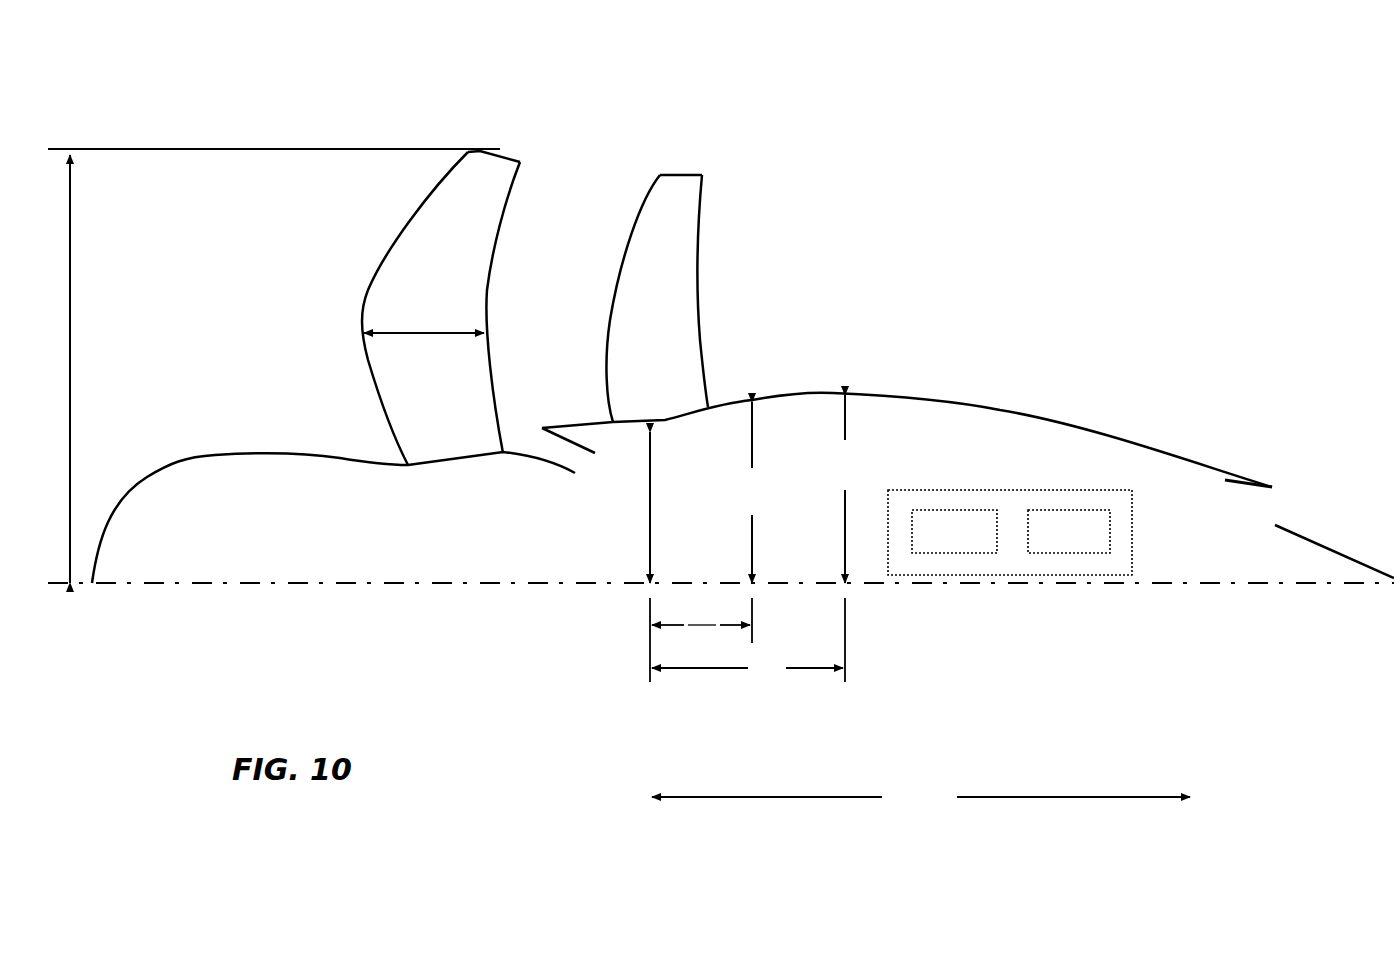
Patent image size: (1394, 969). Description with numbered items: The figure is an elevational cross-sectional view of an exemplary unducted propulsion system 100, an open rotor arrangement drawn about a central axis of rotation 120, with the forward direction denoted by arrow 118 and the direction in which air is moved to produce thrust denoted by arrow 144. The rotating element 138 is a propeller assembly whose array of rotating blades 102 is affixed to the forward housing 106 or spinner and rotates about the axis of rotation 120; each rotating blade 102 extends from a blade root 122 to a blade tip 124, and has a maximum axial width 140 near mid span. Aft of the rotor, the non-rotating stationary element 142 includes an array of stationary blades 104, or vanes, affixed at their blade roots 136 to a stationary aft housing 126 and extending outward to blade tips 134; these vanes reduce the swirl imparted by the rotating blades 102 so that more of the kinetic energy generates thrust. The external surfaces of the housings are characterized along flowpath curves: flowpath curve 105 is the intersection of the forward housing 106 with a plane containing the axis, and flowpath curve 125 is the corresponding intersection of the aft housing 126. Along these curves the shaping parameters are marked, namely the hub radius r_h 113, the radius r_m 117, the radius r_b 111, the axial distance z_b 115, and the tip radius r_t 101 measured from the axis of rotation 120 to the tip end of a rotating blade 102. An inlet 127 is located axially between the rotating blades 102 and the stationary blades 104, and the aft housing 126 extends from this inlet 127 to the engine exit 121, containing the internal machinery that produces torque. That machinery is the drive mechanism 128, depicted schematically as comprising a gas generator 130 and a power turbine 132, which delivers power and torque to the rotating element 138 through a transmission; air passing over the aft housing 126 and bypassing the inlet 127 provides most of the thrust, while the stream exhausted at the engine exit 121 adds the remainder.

The unducted propulsion system 100 is at (994, 134).
The tip radius r_t 101 is at (120, 310).
The rotating blades 102 is at (441, 308).
The stationary blades (vanes) 104 is at (657, 298).
The forward housing flowpath curve 105 is at (232, 455).
The forward housing 106 is at (333, 517).
The radius r_b 111 is at (894, 467).
The hub radius r_h 113 is at (596, 535).
The axial distance z_b 115 is at (734, 672).
The radius r_m 117 is at (705, 466).
The forward direction arrow 118 is at (772, 800).
The axis of rotation 120 is at (1195, 585).
The engine exit 121 is at (1294, 504).
The blade root 122 is at (443, 462).
The blade tip 124 is at (500, 155).
The aft housing flowpath curve 125 is at (830, 392).
The aft housing 126 is at (907, 440).
The inlet 127 is at (528, 432).
The drive mechanism 128 is at (1134, 535).
The gas generator 130 is at (953, 555).
The power turbine 132 is at (1068, 555).
The vane blade tip 134 is at (683, 172).
The vane blade root 136 is at (664, 420).
The rotating element 138 is at (243, 350).
The maximum axial width 140 is at (413, 337).
The non-rotating stationary element 142 is at (869, 248).
The flow direction 144 is at (1062, 800).